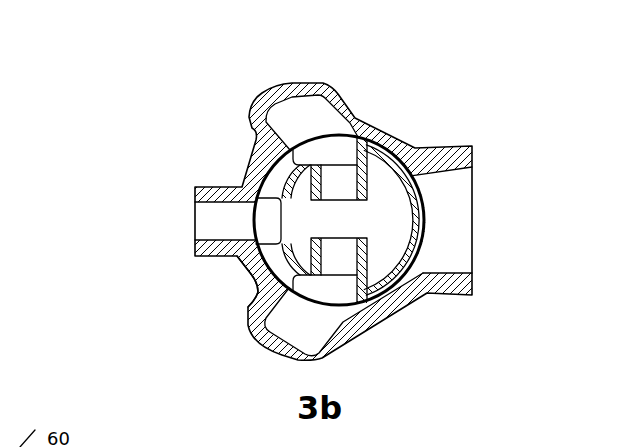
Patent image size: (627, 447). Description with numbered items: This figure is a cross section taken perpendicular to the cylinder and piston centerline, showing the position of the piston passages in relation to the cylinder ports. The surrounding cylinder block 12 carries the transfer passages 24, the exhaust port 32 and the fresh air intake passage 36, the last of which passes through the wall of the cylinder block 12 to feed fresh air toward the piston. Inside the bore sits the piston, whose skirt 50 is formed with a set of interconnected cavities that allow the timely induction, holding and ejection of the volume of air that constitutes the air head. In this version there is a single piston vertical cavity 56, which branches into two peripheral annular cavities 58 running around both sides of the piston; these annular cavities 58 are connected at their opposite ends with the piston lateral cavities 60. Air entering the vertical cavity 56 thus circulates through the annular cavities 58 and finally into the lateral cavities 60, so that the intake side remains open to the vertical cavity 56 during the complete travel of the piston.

The cylinder block 12 is at (398, 298).
The transfer passages 24 is at (312, 115).
The exhaust port 32 is at (453, 232).
The fresh air intake passage 36 is at (227, 217).
The piston skirt 50 is at (420, 203).
The piston vertical cavities 56 is at (238, 255).
The piston annular cavities 58 is at (256, 287).
The piston lateral cavities 60 is at (334, 152).